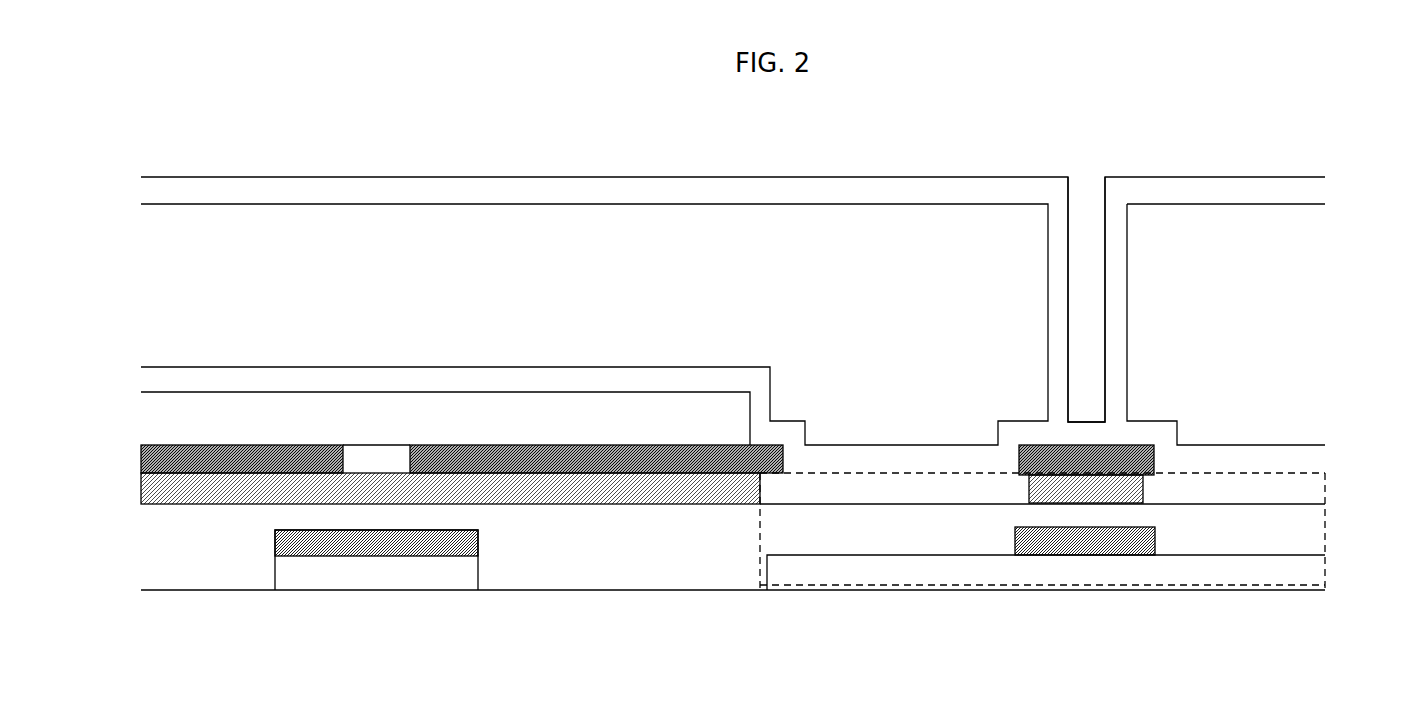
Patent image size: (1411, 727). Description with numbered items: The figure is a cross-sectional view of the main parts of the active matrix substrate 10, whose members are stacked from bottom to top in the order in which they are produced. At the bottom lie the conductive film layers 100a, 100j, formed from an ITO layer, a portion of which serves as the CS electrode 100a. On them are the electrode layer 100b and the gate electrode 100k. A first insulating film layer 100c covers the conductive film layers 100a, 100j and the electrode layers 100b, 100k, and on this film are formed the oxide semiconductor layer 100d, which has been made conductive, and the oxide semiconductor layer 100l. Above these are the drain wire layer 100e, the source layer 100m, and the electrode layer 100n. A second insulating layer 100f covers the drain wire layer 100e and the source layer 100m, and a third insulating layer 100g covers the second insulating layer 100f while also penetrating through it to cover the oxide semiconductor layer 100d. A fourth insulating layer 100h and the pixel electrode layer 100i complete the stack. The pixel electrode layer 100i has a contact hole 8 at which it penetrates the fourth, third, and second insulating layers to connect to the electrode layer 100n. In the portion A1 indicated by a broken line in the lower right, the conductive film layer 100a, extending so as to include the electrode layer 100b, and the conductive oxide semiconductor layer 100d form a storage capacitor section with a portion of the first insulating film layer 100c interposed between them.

The active matrix substrate 10 is at (853, 157).
The contact hole 8 is at (1086, 190).
The conductive film layer 100a is at (915, 572).
The electrode layer 100b is at (1093, 557).
The first insulating film layer 100c is at (627, 560).
The oxide semiconductor layer 100d is at (1297, 490).
The drain wire layer 100e is at (543, 458).
The second insulating layer 100f is at (445, 415).
The third insulating layer 100g is at (583, 378).
The fourth insulating layer 100h is at (1297, 320).
The pixel electrode layer 100i is at (1297, 190).
The conductive film layer 100j is at (393, 567).
The gate electrode 100k is at (300, 557).
The oxide semiconductor layer 100l is at (527, 486).
The source electrode 100m is at (296, 455).
The electrode layer 100n is at (1018, 460).
The portion A1 is at (1335, 527).